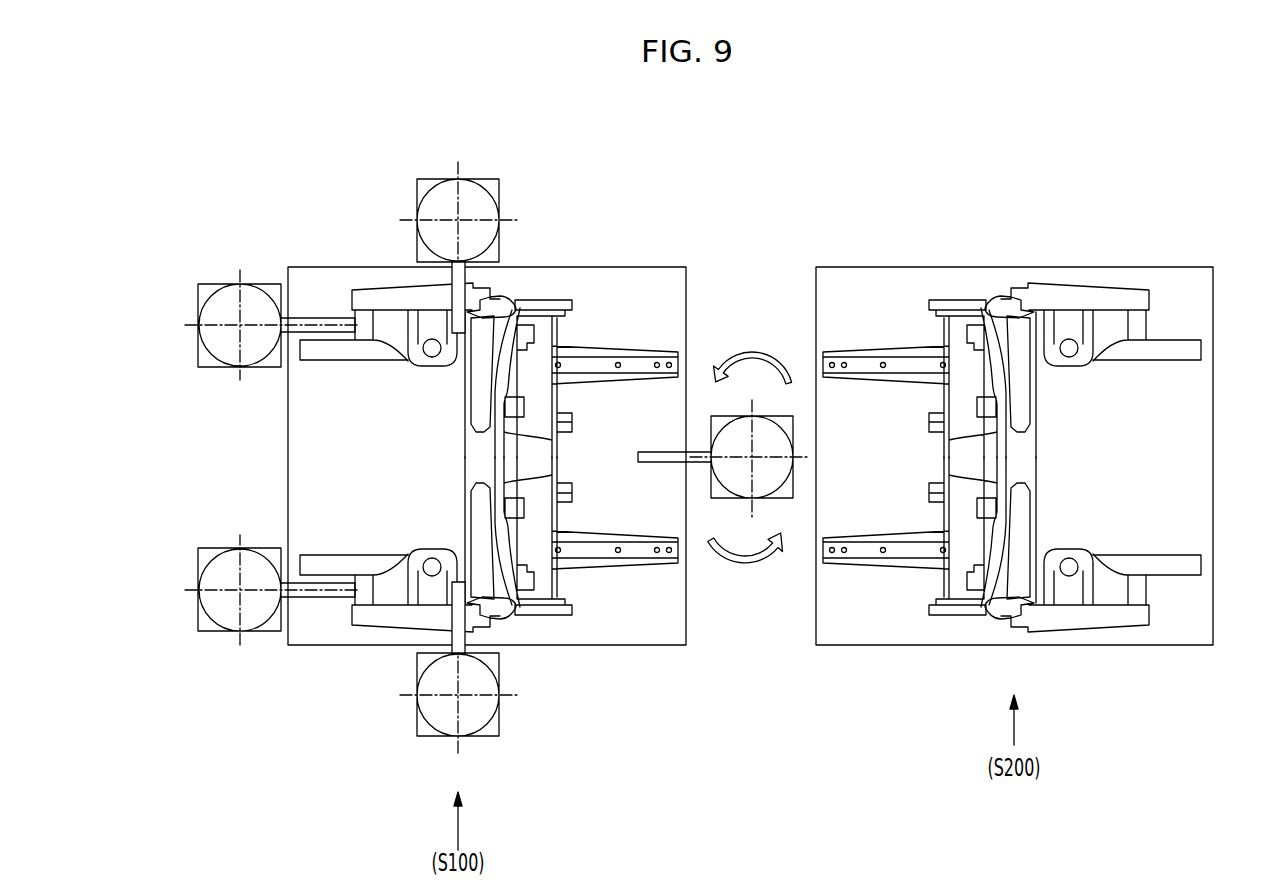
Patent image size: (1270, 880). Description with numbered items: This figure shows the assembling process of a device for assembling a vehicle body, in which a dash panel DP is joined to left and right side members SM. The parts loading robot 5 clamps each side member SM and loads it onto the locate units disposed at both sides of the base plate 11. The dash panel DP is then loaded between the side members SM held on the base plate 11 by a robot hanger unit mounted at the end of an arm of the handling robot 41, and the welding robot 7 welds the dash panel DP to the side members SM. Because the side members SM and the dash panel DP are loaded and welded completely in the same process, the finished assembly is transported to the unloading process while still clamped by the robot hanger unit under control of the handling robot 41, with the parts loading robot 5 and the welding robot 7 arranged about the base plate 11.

The parts loading robot 5 is at (218, 278).
The welding robot 7 is at (481, 169).
The base plate 11 is at (657, 272).
The handling robot 41 is at (740, 501).
The side member SM is at (388, 290).
The dash panel DP is at (544, 518).